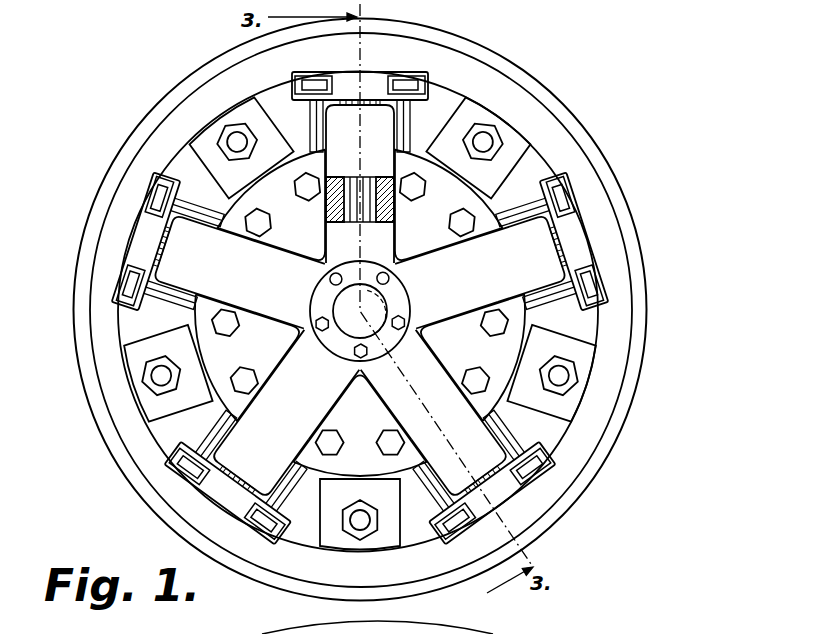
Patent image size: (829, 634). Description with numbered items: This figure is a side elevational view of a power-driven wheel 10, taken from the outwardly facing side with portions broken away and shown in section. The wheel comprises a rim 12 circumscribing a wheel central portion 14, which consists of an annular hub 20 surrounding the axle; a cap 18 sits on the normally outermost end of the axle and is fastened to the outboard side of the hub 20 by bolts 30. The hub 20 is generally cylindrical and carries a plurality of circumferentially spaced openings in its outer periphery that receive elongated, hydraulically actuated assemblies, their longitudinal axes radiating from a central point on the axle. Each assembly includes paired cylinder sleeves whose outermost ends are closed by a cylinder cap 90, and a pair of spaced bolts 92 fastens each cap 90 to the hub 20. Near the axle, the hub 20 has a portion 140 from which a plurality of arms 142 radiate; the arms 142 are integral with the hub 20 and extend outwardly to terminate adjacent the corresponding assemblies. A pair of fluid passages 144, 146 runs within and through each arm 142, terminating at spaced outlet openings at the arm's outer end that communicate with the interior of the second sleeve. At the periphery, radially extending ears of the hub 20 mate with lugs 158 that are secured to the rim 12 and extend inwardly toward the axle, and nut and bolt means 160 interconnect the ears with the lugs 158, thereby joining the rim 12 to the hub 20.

The power-driven wheel 10 is at (540, 80).
The rim 12 is at (618, 208).
The wheel central portion 14 is at (596, 328).
The cap 18 is at (396, 302).
The annular hub 20 is at (307, 163).
The bolts 30 is at (318, 318).
The cylinder cap 90 is at (368, 73).
The bolts 92 is at (316, 76).
The portion of hub 140 is at (366, 375).
The arms 142 is at (335, 243).
The fluid passage 144 is at (336, 207).
The fluid passage 146 is at (380, 209).
The lugs 158 is at (273, 135).
The nut and bolt means 160 is at (490, 140).